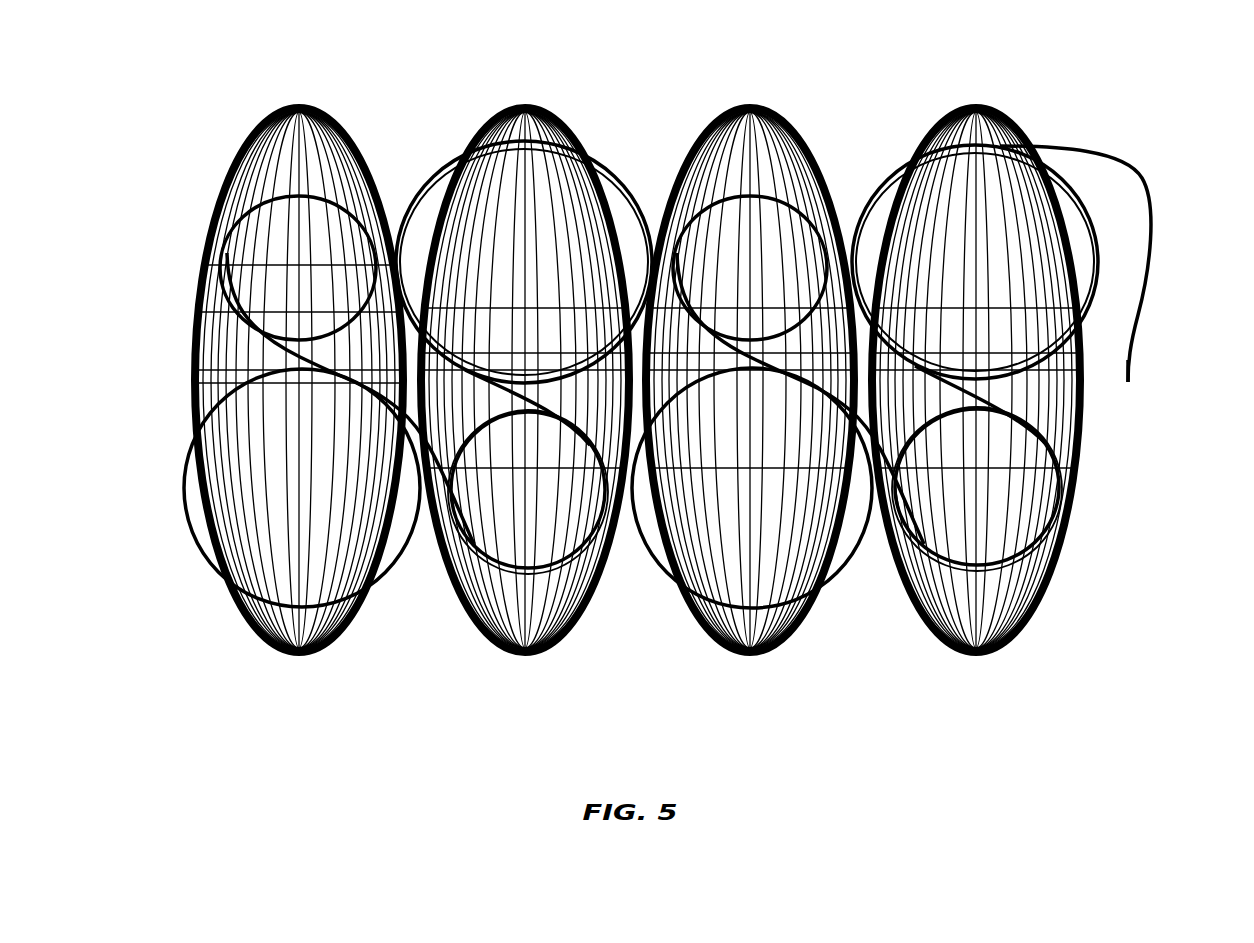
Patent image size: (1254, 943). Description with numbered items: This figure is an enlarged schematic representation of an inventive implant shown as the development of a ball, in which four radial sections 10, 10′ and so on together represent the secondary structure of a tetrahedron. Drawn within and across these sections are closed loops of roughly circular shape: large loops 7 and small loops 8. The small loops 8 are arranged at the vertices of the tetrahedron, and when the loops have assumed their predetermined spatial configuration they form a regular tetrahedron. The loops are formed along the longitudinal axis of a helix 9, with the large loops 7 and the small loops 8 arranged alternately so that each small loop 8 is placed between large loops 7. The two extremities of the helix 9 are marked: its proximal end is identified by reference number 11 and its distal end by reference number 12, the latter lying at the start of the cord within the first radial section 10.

The large loops 7 is at (592, 168).
The small loops 8 is at (357, 217).
The helix 9 is at (1157, 222).
The radial section 10 is at (298, 104).
The radial section 10′ is at (526, 104).
The proximal end of helix 11 is at (1133, 412).
The distal end of helix 12 is at (225, 250).